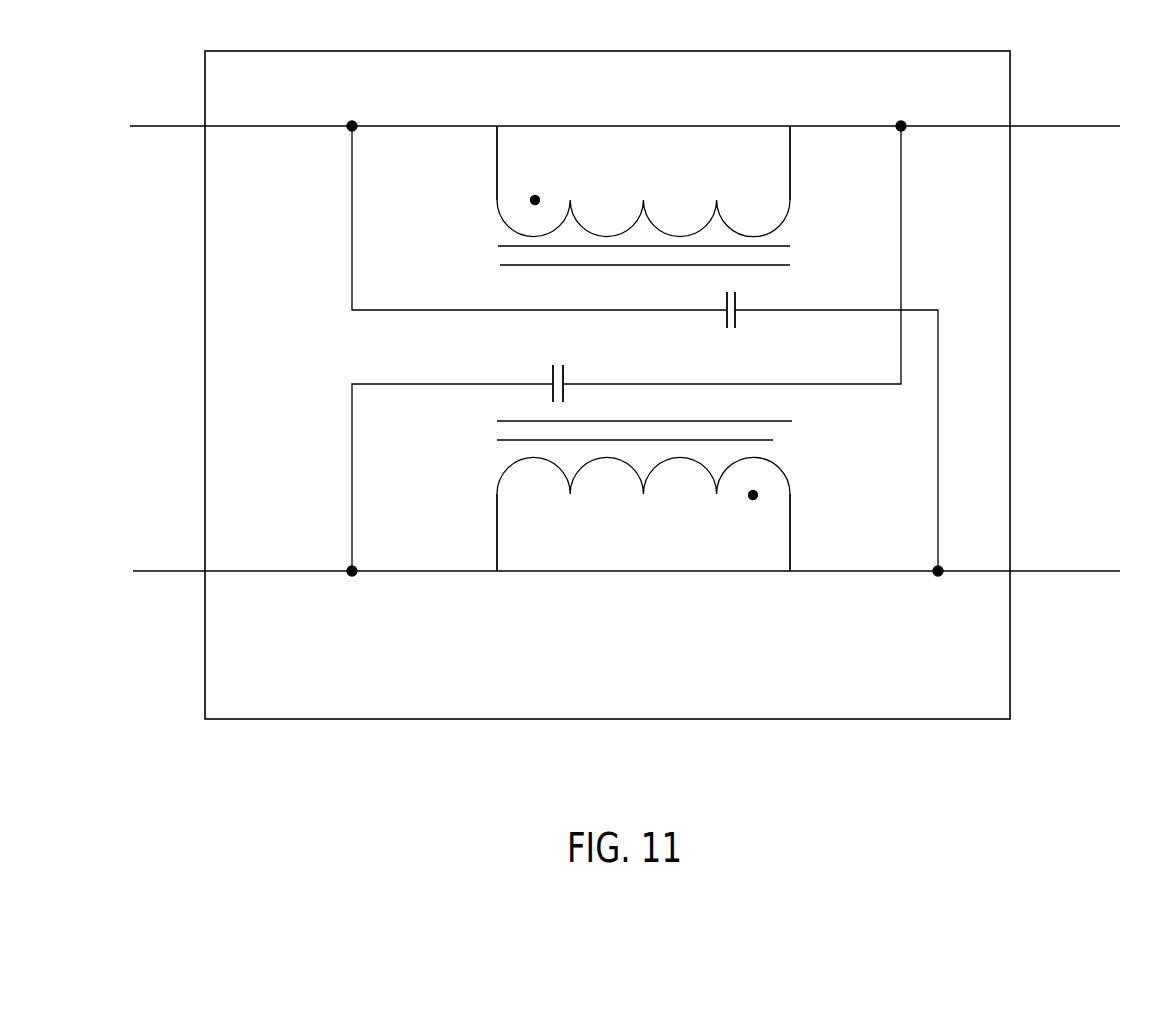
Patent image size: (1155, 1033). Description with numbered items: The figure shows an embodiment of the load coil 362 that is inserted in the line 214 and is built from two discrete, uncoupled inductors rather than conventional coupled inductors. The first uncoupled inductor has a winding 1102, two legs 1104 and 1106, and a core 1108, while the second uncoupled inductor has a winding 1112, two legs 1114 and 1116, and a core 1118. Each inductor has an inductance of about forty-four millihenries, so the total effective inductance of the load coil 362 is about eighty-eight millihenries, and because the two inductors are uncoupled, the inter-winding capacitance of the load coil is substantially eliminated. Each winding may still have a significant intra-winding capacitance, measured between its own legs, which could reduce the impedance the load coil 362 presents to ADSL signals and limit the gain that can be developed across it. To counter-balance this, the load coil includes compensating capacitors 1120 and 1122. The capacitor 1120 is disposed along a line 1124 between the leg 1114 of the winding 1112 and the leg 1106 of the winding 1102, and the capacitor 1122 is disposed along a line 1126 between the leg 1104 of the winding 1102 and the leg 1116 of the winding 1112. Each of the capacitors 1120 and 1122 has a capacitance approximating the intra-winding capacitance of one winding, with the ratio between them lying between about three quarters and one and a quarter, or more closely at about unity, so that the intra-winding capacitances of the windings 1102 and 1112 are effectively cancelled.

The telephone line 214 is at (178, 571).
The load coil 362 is at (1010, 642).
The winding 1102 is at (792, 231).
The leg 1104 is at (497, 166).
The leg 1106 is at (790, 150).
The core 1108 is at (500, 265).
The winding 1112 is at (482, 485).
The leg 1114 is at (497, 561).
The leg 1116 is at (791, 522).
The core 1118 is at (773, 440).
The compensating capacitor 1120 is at (565, 377).
The compensating capacitor 1122 is at (735, 318).
The line 1124 is at (352, 452).
The line 1126 is at (352, 268).